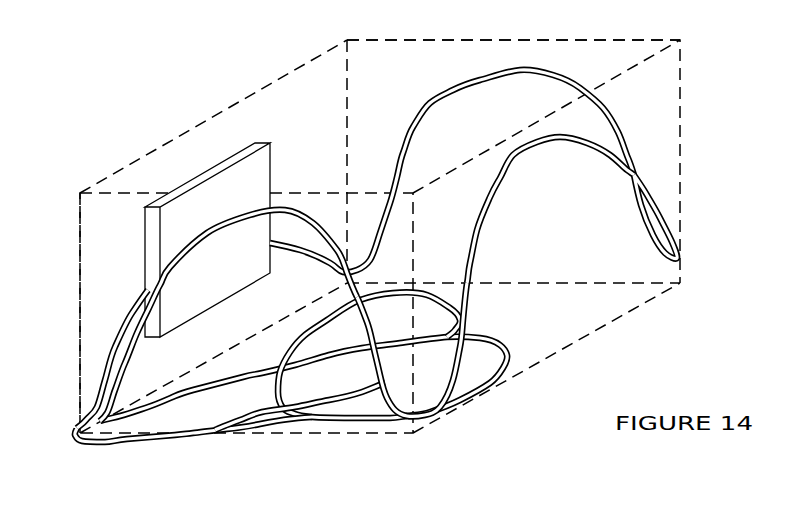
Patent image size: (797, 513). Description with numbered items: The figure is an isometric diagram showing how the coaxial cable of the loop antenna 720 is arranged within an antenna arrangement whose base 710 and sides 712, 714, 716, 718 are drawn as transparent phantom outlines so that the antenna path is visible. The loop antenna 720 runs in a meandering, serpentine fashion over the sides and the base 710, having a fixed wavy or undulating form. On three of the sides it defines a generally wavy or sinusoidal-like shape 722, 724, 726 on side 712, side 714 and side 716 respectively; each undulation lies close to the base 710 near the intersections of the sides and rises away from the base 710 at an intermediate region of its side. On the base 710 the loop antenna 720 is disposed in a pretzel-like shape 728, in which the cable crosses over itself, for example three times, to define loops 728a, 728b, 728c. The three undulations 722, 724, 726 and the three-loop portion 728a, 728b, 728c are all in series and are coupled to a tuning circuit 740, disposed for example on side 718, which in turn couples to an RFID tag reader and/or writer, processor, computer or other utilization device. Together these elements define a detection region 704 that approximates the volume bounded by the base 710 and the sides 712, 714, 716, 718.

The detection region 704 is at (527, 38).
The base 710 is at (384, 284).
The side 712 is at (103, 230).
The side 714 is at (667, 85).
The side 716 is at (423, 73).
The side 718 is at (330, 90).
The loop antenna 720 is at (657, 197).
The wavy or sinusoidal-like shape 722 is at (113, 353).
The wavy or sinusoidal-like shape 724 is at (537, 150).
The wavy or sinusoidal-like shape 726 is at (493, 83).
The pretzel-like shape 728 is at (388, 421).
The loop 728a is at (263, 420).
The loop 728b is at (490, 340).
The loop 728c is at (308, 330).
The tuning circuit 740 is at (257, 262).